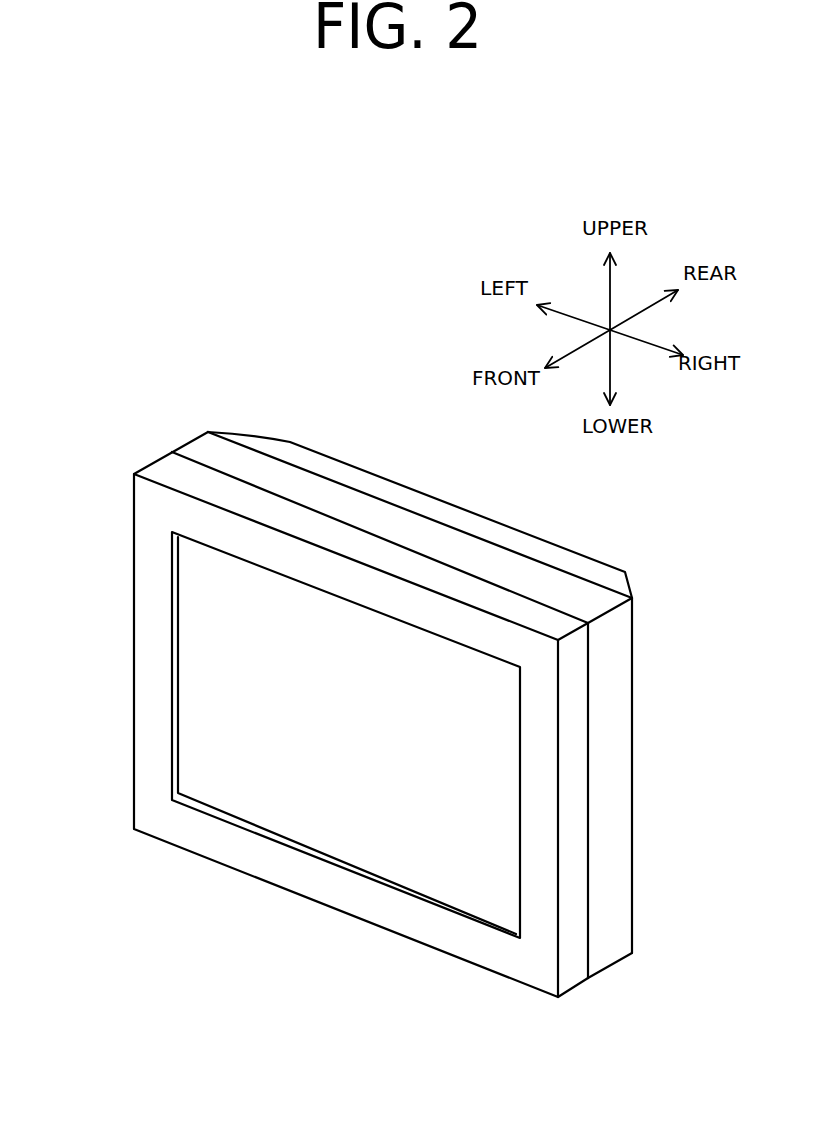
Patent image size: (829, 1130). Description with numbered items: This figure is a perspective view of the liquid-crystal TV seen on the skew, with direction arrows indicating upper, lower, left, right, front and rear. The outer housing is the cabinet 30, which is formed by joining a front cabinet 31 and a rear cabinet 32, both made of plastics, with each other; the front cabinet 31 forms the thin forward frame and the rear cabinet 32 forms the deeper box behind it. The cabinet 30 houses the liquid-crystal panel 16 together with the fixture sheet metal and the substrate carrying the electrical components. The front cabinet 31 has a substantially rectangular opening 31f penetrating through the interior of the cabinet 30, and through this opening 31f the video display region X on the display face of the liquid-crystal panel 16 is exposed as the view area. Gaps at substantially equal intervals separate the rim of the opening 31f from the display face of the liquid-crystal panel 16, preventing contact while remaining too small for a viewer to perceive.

The cabinet 30 is at (245, 313).
The front cabinet 31 is at (152, 462).
The rear cabinet 32 is at (186, 440).
The opening 31f is at (500, 785).
The liquid-crystal panel 16 is at (212, 683).
The video display region X is at (347, 843).